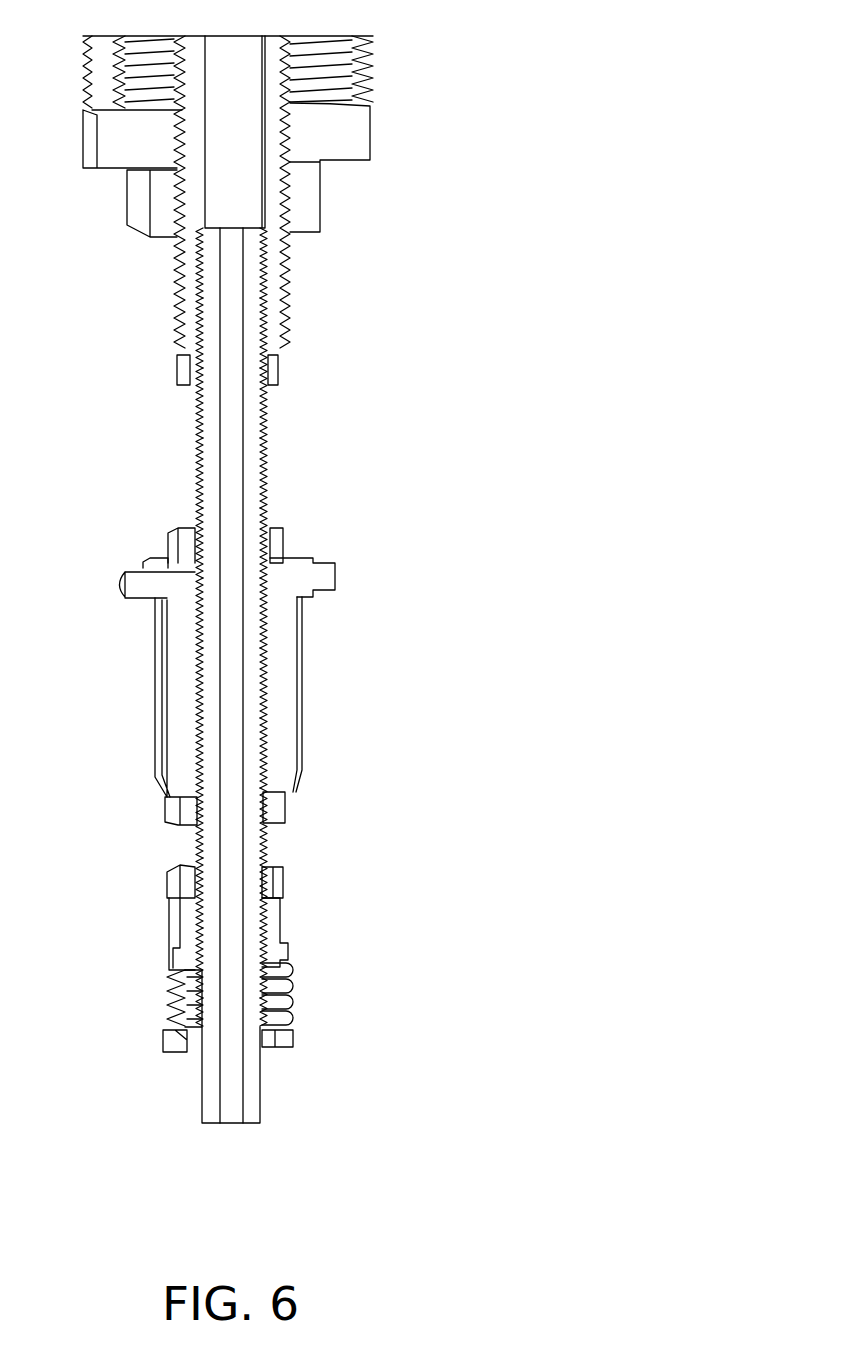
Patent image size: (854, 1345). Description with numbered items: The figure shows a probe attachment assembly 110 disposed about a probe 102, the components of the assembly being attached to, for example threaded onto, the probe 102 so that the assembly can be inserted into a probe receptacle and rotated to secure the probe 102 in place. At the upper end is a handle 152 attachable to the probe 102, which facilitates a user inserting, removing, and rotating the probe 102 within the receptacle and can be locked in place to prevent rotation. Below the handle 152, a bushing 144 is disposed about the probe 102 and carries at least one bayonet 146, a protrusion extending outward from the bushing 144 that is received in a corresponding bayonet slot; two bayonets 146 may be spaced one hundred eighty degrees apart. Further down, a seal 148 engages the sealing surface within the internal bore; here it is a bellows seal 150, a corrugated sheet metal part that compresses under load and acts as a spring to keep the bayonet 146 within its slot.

The probe attachment assembly 110 is at (458, 49).
The handle 152 is at (352, 162).
The probe 102 is at (202, 1107).
The bayonet 146 is at (123, 583).
The bushing 144 is at (157, 728).
The seal 148 is at (312, 941).
The bellows seal 150 is at (168, 993).